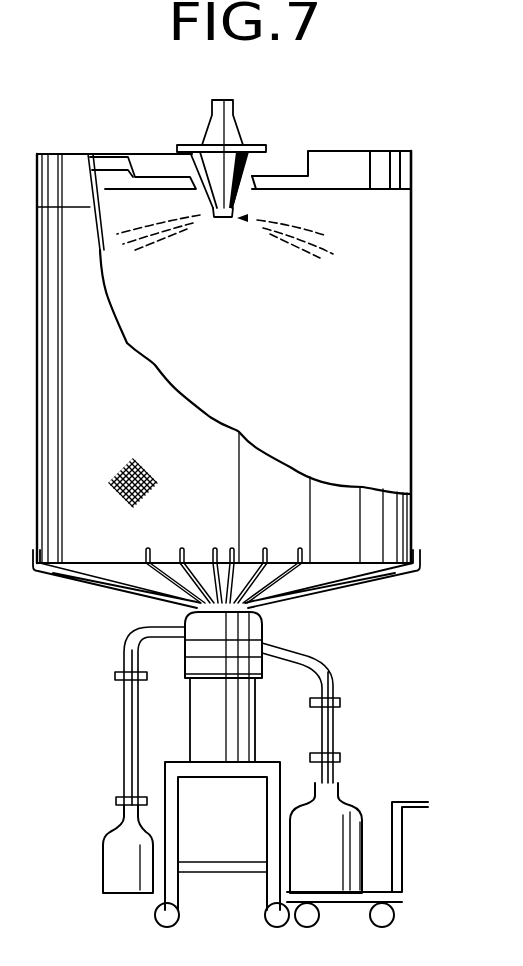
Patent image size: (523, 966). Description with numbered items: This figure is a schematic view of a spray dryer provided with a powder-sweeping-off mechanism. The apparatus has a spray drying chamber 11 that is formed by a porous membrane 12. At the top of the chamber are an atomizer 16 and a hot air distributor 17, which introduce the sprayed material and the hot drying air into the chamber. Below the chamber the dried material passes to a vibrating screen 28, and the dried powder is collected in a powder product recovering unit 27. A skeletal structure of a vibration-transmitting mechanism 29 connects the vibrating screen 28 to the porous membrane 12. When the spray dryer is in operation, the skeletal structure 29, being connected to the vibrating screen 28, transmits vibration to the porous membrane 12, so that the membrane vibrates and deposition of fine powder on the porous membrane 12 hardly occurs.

The spray drying chamber 11 is at (405, 342).
The porous membrane 12 is at (413, 510).
The atomizer 16 is at (243, 147).
The hot air distributor 17 is at (148, 163).
The powder product recovering unit 27 is at (347, 813).
The vibrating screen 28 is at (260, 612).
The skeletal structure of a vibration-transmitting mechanism 29 is at (418, 567).